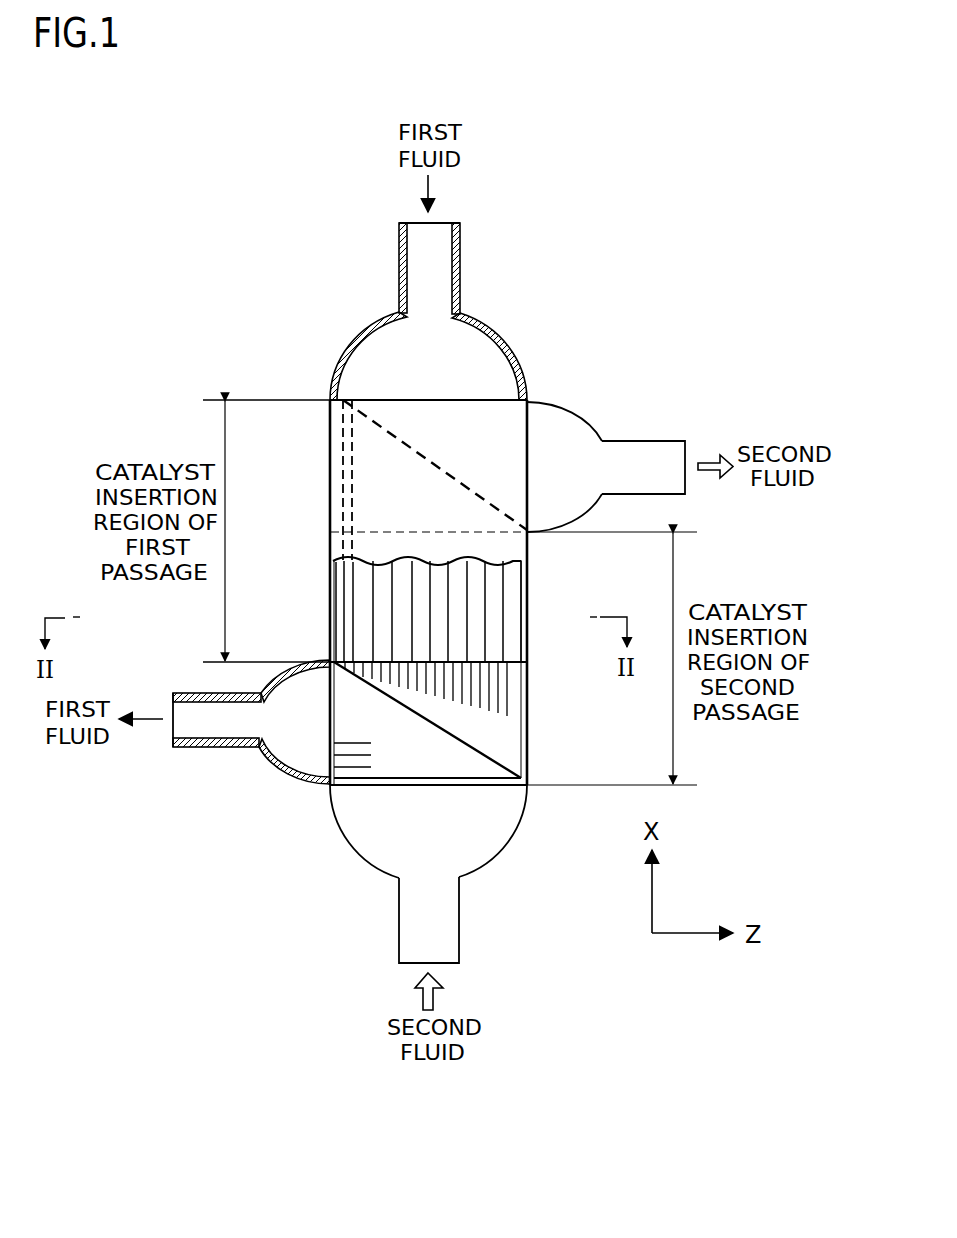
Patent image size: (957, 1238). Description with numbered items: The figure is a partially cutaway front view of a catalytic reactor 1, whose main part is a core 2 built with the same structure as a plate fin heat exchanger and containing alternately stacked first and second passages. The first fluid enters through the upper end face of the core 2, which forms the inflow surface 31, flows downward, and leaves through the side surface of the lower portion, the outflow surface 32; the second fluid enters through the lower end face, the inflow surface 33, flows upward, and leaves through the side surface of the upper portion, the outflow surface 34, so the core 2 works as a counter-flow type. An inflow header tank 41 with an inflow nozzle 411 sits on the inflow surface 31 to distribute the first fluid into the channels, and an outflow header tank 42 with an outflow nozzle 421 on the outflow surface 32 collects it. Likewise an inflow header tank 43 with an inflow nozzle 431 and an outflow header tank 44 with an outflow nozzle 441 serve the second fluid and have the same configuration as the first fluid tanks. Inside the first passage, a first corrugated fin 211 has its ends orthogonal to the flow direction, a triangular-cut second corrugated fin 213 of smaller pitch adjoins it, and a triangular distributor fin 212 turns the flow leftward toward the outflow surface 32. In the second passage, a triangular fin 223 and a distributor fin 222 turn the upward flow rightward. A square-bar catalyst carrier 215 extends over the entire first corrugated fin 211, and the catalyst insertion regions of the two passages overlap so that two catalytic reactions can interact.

The catalytic reactor 1 is at (612, 302).
The core 2 is at (330, 500).
The inflow surface 31 is at (468, 400).
The outflow surface 32 is at (327, 690).
The inflow surface 33 is at (375, 787).
The outflow surface 34 is at (531, 506).
The inflow header tank 41 is at (345, 356).
The outflow header tank 42 is at (277, 771).
The inflow header tank 43 is at (375, 878).
The outflow header tank 44 is at (590, 513).
The first corrugated fin 211 is at (527, 647).
The distributor fin 212 is at (457, 768).
The second corrugated fin (triangular fin) 213 is at (527, 742).
The catalyst carrier 215 is at (343, 444).
The distributor fin 222 is at (375, 413).
The triangular fin 223 is at (460, 510).
The inflow nozzle 411 is at (460, 256).
The outflow nozzle 421 is at (206, 748).
The inflow nozzle 431 is at (459, 933).
The outflow nozzle 441 is at (655, 441).